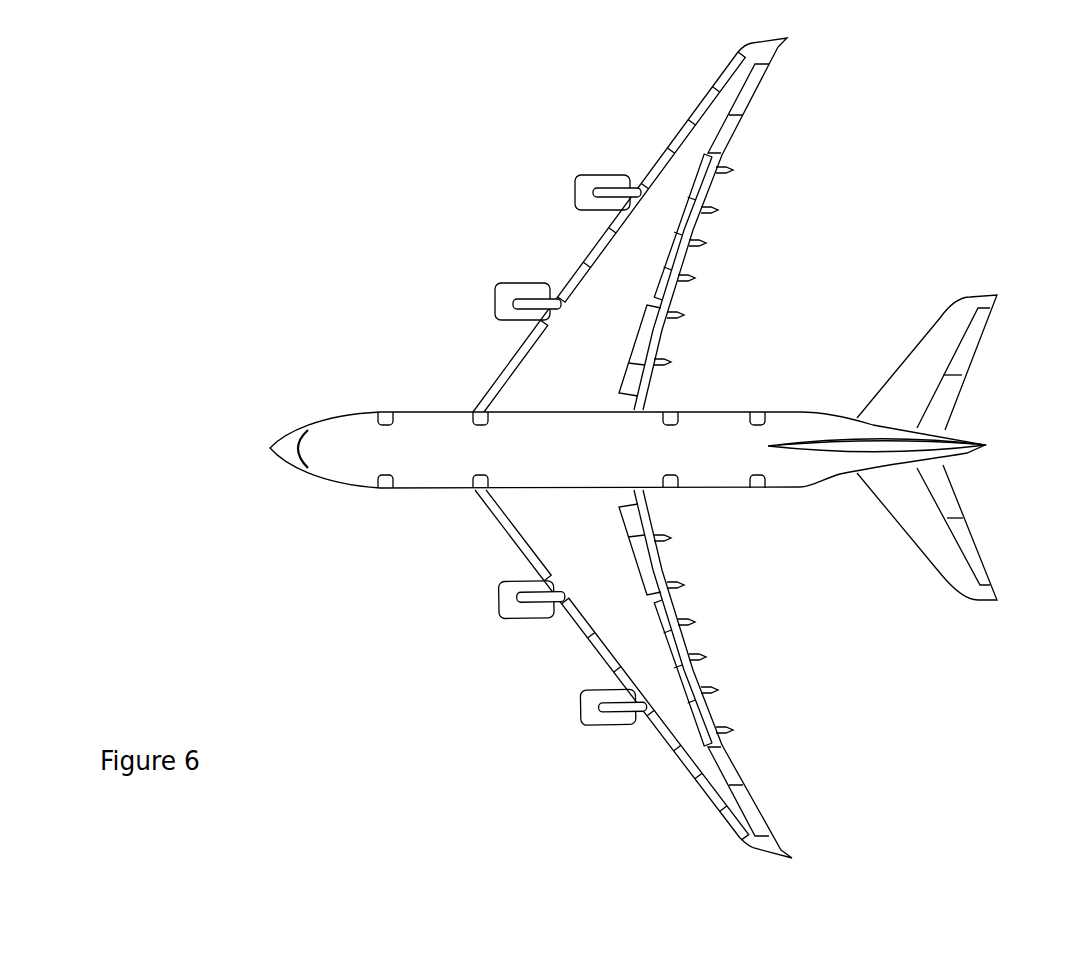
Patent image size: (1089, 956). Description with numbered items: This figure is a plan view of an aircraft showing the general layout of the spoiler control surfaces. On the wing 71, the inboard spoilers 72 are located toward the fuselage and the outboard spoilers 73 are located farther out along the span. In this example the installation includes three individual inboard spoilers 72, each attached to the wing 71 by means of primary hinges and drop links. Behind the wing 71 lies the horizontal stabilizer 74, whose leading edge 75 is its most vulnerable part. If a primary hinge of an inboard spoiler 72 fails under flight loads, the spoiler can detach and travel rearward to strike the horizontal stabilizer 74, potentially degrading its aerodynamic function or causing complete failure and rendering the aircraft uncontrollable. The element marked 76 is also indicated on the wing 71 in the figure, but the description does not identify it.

The wing 71 is at (740, 48).
The inboard spoilers 72 is at (636, 347).
The outboard spoilers 73 is at (675, 238).
The horizontal stabilizer 74 is at (978, 295).
The leading edge 75 is at (910, 348).
The spoiler 76 is at (636, 347).